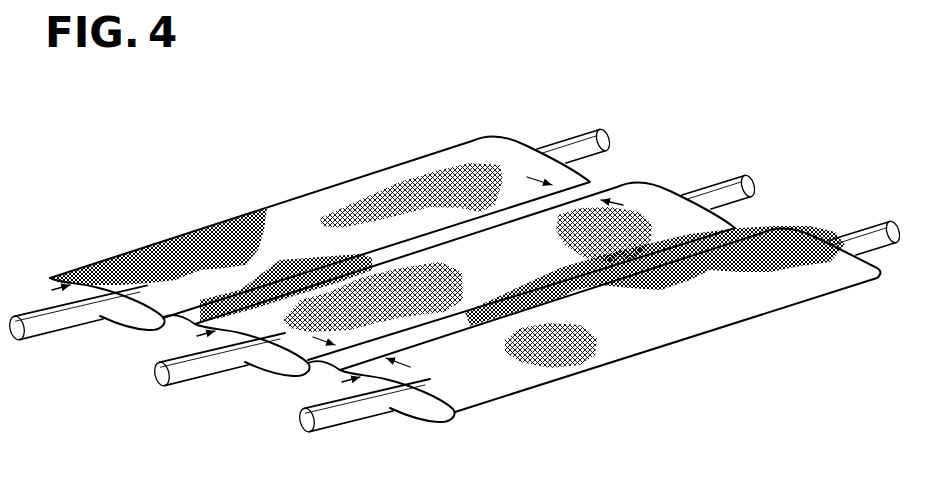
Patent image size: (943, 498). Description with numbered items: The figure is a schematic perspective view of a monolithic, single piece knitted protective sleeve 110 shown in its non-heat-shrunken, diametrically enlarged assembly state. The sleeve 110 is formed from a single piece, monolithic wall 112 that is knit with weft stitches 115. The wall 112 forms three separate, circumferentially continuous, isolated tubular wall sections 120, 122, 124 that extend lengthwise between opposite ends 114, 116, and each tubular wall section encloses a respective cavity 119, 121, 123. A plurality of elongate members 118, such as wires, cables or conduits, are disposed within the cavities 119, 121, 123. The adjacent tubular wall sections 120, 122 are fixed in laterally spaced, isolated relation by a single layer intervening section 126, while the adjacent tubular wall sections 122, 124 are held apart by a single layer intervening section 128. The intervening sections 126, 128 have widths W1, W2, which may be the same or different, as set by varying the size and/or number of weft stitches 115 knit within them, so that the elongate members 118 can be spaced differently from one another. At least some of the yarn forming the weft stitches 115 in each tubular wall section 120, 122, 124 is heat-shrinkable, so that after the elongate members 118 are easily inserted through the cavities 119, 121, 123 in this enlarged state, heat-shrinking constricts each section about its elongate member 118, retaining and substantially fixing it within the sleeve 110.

The sleeve 110 is at (246, 140).
The wall 112 is at (620, 180).
The end 114 is at (164, 325).
The weft stitches 115 is at (160, 245).
The end 116 is at (753, 232).
The elongate members 118 is at (43, 312).
The cavity 119 is at (45, 278).
The tubular wall section 120 is at (507, 158).
The cavity 121 is at (210, 338).
The tubular wall section 122 is at (667, 207).
The cavity 123 is at (434, 406).
The tubular wall section 124 is at (733, 283).
The intervening section 126 is at (400, 248).
The intervening section 128 is at (460, 320).
The width W1 is at (550, 172).
The width W2 is at (400, 372).